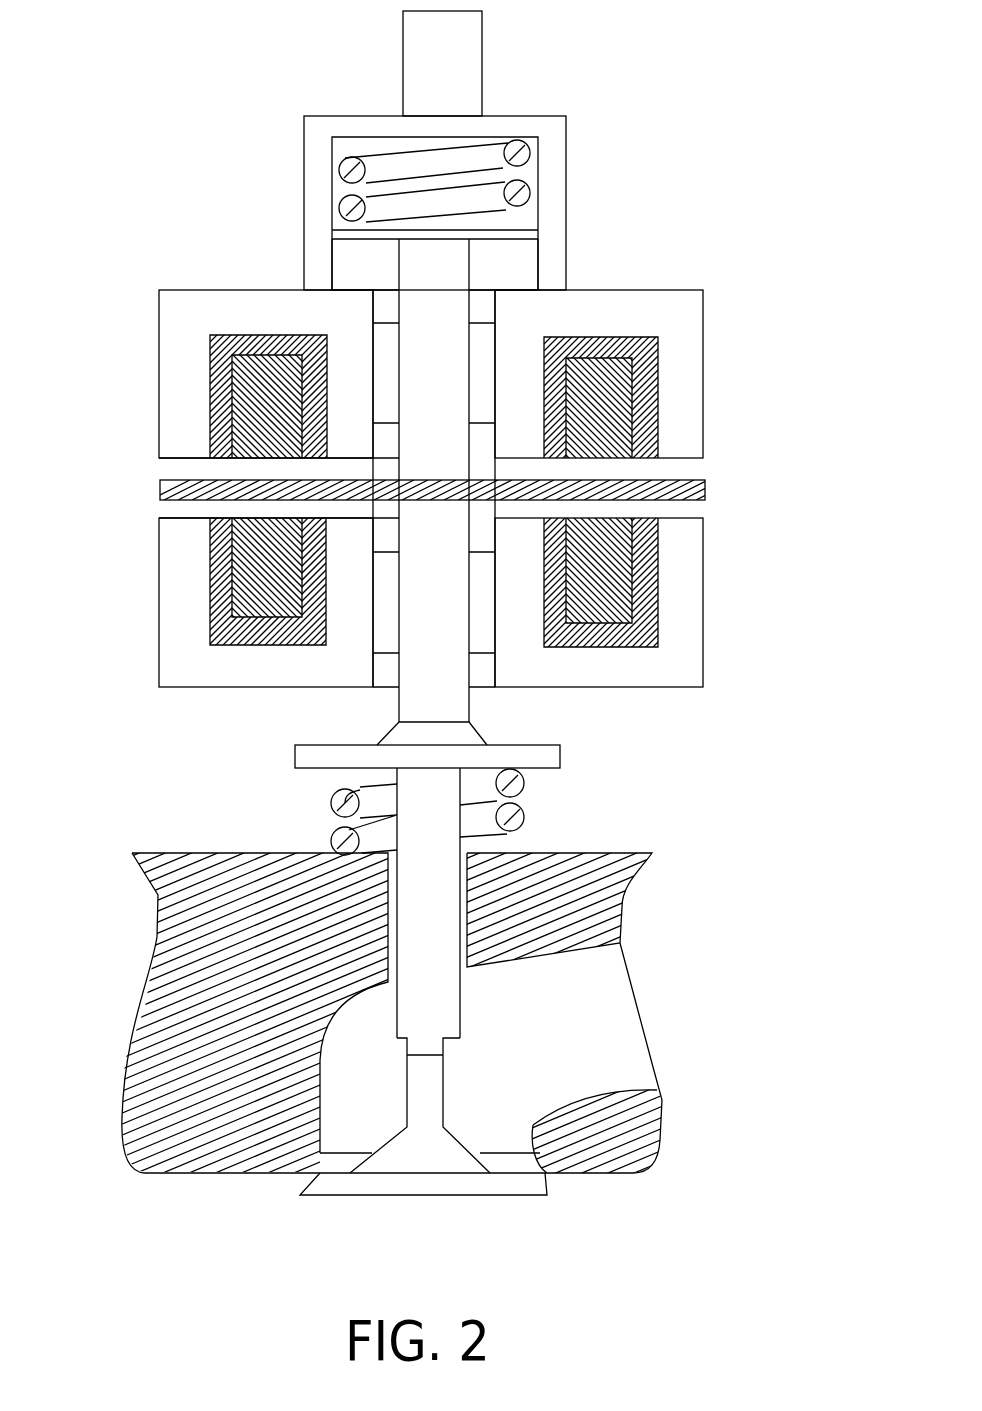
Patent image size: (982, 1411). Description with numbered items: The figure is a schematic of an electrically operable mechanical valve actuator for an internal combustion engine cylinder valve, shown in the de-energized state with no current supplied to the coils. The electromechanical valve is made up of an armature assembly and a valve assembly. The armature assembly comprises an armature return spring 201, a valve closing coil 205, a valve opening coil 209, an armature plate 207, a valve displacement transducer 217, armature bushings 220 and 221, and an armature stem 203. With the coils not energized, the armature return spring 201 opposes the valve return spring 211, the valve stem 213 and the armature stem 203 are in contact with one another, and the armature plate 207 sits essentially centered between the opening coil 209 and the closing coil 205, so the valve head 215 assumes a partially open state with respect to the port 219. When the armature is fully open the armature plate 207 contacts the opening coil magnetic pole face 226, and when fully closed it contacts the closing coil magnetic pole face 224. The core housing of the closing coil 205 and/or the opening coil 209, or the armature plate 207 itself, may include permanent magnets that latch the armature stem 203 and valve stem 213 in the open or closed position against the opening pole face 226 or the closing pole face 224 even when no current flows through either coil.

The armature return spring 201 is at (538, 190).
The armature stem 203 is at (397, 277).
The valve closing coil 205 is at (657, 412).
The armature plate 207 is at (705, 488).
The valve opening coil 209 is at (660, 585).
The valve return spring 211 is at (513, 817).
The valve stem 213 is at (418, 907).
The valve head 215 is at (503, 1197).
The valve displacement transducer 217 is at (483, 53).
The port 219 is at (500, 1128).
The armature bushing 220 is at (484, 690).
The armature bushing 221 is at (483, 283).
The closing coil magnetic pole face 224 is at (257, 460).
The opening coil magnetic pole face 226 is at (260, 522).